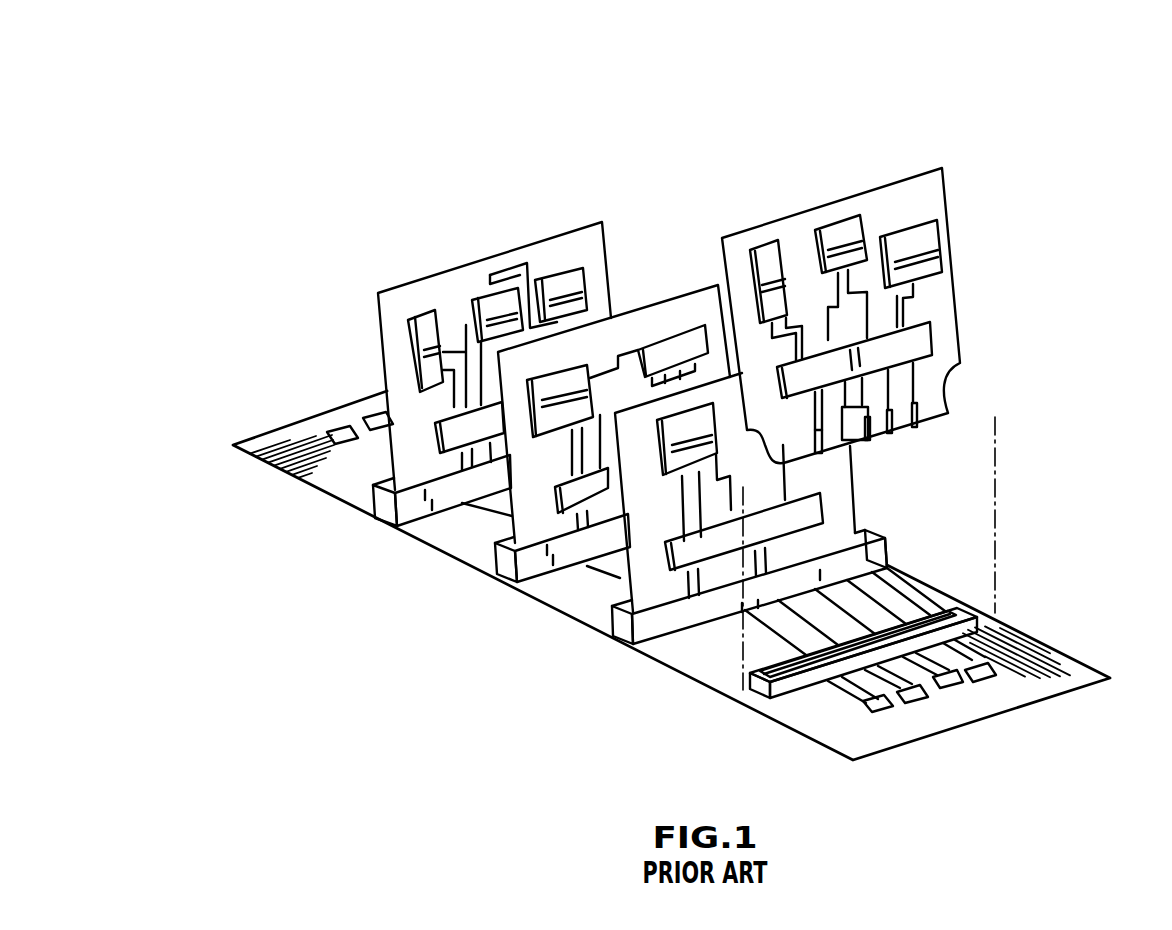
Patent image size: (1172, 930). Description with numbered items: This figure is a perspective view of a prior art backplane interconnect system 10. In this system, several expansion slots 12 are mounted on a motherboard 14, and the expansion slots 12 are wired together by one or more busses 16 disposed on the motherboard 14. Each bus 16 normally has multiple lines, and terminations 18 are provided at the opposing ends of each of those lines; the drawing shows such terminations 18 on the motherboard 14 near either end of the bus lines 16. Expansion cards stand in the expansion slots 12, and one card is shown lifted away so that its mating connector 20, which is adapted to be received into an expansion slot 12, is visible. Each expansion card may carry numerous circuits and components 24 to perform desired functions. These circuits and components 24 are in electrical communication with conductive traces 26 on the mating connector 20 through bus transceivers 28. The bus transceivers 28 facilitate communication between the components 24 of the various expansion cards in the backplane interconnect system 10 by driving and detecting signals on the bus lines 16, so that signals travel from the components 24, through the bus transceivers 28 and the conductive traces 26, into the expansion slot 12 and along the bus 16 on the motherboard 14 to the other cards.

The backplane interconnect system 10 is at (588, 122).
The expansion slots 12 is at (388, 510).
The motherboard 14 is at (920, 750).
The busses 16 is at (873, 610).
The terminations 18 is at (310, 437).
The mating connector 20 is at (952, 366).
The circuits and components 24 is at (759, 230).
The conductive traces 26 is at (945, 364).
The bus transceivers 28 is at (962, 318).